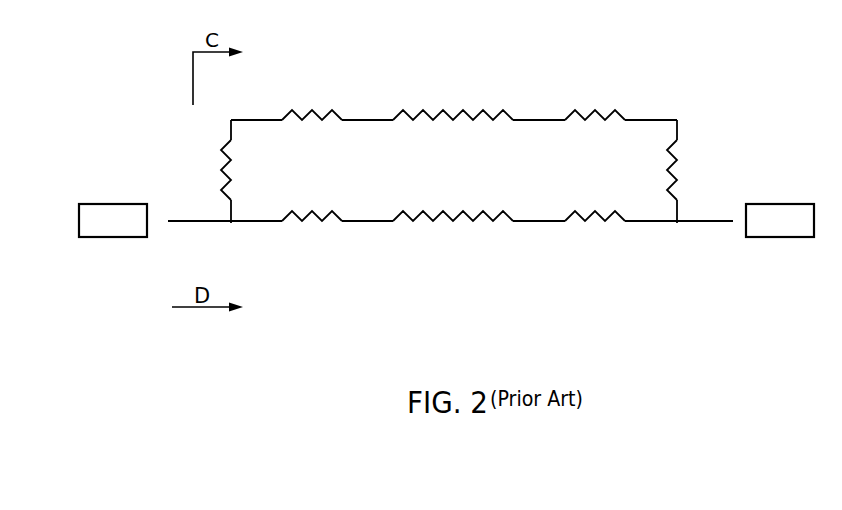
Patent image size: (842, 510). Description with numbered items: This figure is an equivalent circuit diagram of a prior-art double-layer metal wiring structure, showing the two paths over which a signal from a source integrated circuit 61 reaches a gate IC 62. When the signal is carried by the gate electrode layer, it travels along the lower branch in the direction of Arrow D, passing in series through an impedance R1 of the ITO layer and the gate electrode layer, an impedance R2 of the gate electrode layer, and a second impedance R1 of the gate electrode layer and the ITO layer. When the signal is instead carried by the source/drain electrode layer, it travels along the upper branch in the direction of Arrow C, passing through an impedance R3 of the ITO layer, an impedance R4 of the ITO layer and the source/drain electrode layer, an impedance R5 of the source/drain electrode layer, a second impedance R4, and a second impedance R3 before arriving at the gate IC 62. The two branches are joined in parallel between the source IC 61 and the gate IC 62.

The source integrated circuit 61 is at (115, 204).
The gate IC 62 is at (782, 204).
The impedance of the ITO layer and the gate electrode layer R1 is at (453, 231).
The impedance of the gate electrode layer R2 is at (453, 231).
The impedance of the ITO layer R3 is at (449, 170).
The impedance of the ITO layer and the source/drain electrode layer R4 is at (453, 100).
The impedance of the source/drain electrode layer R5 is at (453, 100).